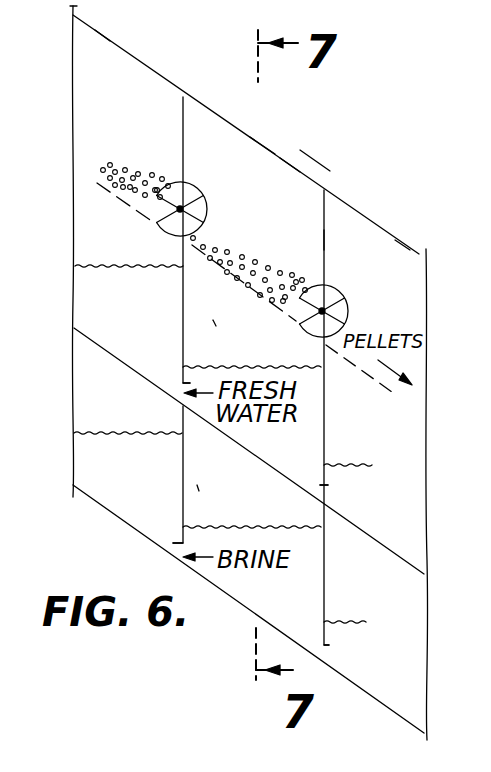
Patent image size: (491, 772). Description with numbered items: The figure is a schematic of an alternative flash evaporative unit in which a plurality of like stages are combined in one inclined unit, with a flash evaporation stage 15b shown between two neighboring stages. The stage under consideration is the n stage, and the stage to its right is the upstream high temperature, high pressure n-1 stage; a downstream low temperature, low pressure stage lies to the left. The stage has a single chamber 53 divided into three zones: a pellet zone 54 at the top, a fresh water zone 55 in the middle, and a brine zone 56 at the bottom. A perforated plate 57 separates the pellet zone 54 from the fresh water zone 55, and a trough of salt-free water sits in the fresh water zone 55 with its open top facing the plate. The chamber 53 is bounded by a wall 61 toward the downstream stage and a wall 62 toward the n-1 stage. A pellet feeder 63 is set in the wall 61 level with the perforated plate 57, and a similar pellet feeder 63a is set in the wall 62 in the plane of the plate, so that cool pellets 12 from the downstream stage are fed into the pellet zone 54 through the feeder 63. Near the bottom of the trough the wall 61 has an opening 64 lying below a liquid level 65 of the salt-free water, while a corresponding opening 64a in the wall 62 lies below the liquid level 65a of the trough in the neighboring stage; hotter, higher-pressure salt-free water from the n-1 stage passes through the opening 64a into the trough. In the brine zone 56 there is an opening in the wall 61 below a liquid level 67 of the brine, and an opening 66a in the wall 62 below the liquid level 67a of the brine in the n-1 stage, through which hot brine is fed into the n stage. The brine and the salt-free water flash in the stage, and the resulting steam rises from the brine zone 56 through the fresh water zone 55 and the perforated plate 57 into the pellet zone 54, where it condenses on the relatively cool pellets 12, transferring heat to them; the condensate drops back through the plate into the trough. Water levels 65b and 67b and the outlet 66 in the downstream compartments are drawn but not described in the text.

The pellets 12 is at (108, 163).
The flash evaporation stage 15b is at (307, 146).
The chamber 53 is at (325, 215).
The pellet zone 54 is at (260, 165).
The fresh water zone 55 is at (213, 323).
The brine zone 56 is at (197, 488).
The perforated plate 57 is at (210, 262).
The wall 61 is at (183, 96).
The wall 62 is at (325, 240).
The pellet feeder 63 is at (194, 186).
The pellet feeder 63a is at (342, 286).
The opening 64 is at (183, 383).
The opening 64a is at (327, 484).
The liquid level 65 is at (232, 368).
The liquid level 65a is at (345, 464).
The fresh water level 65b is at (110, 265).
The brine outlet 66 is at (173, 543).
The opening 66a is at (328, 645).
The liquid level 67 is at (215, 527).
The liquid level 67a is at (342, 622).
The brine level 67b is at (100, 433).
The n stage n is at (293, 190).
The n-1 stage n-1 is at (403, 264).